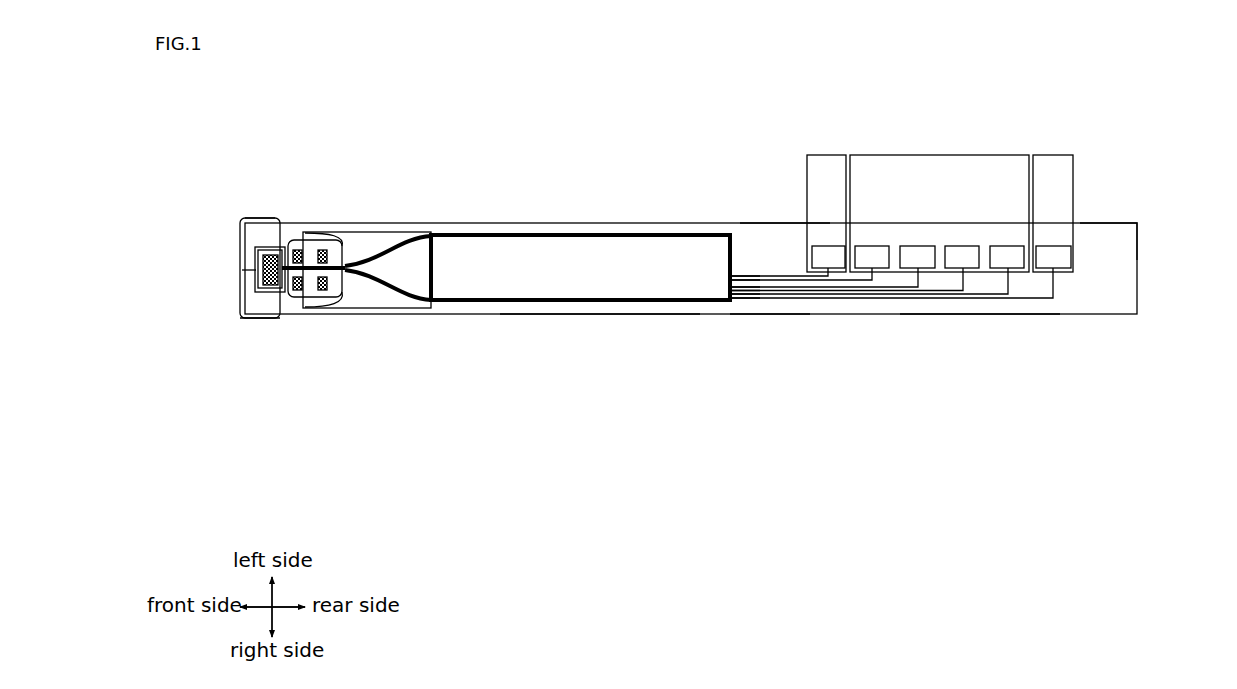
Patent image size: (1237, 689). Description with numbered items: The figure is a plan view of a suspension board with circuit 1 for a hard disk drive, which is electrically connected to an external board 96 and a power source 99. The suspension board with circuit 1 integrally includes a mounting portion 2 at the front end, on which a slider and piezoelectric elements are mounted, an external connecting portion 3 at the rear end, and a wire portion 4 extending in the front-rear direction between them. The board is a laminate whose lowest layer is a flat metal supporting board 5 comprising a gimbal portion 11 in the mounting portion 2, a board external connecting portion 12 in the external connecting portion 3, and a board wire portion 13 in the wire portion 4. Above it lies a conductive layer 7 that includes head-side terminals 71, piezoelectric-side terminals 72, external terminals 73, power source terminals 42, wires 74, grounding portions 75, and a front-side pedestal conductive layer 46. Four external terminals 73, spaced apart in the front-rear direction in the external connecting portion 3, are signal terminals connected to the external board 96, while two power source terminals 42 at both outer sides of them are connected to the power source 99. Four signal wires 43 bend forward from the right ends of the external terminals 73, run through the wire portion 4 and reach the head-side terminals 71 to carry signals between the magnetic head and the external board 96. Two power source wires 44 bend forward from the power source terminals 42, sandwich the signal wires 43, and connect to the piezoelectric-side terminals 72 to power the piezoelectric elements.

The suspension board with circuit 1 is at (601, 398).
The mounting portion 2 is at (278, 343).
The external connecting portion 3 is at (975, 343).
The wire portion 4 is at (768, 343).
The metal supporting board 5 is at (1137, 283).
The conductive layer 7 is at (540, 304).
The gimbal portion 11 is at (291, 220).
The board external connecting portion 12 is at (1122, 223).
The board wire portion 13 is at (780, 223).
The power source terminals 42 is at (828, 246).
The signal wires 43 is at (510, 235).
The power source wires 44 is at (748, 275).
The front-side pedestal conductive layer 46 is at (277, 293).
The head-side terminals 71 is at (262, 283).
The piezoelectric-side terminals 72 is at (298, 246).
The external terminals 73 is at (1008, 246).
The wires 74 is at (801, 305).
The grounding portions 75 is at (292, 255).
The external board 96 is at (950, 155).
The power source 99 is at (829, 155).